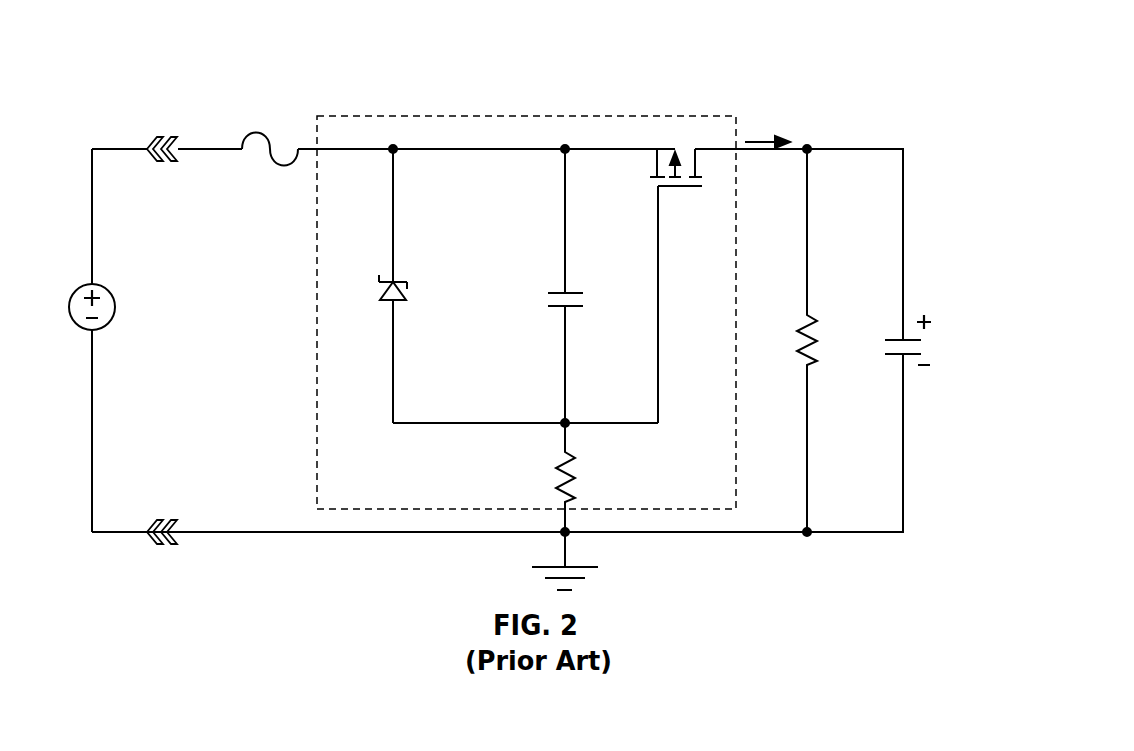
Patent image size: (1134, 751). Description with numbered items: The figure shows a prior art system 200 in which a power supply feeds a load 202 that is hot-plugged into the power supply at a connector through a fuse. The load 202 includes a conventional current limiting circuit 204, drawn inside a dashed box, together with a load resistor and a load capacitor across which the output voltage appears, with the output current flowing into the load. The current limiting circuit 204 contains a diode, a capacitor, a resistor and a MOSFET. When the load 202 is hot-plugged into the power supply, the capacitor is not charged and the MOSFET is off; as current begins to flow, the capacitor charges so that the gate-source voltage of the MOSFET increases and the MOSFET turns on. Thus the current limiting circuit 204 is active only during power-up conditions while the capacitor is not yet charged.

The prior art system 200 is at (887, 62).
The load 202 is at (764, 88).
The current limiting circuit 204 is at (665, 116).